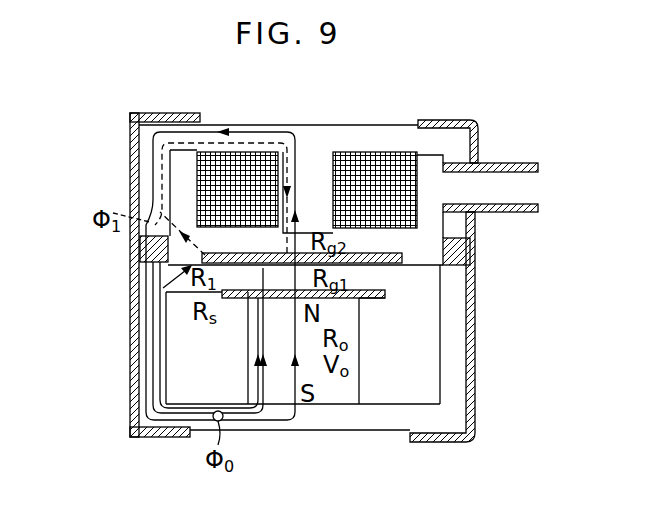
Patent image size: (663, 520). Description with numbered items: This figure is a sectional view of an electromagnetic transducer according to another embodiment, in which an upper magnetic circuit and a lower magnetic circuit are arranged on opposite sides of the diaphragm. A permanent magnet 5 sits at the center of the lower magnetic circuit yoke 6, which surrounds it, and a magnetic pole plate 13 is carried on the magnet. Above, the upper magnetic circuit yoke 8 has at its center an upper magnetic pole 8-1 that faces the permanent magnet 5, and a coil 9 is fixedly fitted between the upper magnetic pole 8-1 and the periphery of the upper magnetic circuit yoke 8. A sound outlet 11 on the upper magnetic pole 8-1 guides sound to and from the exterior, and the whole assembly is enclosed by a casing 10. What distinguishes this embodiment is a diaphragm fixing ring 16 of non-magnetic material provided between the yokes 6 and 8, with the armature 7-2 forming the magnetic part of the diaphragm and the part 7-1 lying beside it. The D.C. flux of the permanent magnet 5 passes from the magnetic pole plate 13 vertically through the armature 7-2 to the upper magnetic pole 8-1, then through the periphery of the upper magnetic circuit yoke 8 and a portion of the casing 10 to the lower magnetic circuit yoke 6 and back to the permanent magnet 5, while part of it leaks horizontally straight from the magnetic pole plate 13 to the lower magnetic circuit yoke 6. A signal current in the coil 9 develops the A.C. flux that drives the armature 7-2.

The permanent magnet 5 is at (359, 357).
The lower magnetic circuit yoke 6 is at (375, 430).
The lower pole plate 7-1 is at (419, 266).
The armature 7-2 is at (388, 240).
The upper magnetic circuit yoke 8 is at (325, 138).
The upper magnetic pole 8-1 is at (315, 217).
The coil 9 is at (373, 157).
The casing 10 is at (132, 345).
The sound outlet 11 is at (506, 163).
The magnetic pole plate 13 is at (372, 299).
The diaphragm fixing ring 16 is at (478, 250).